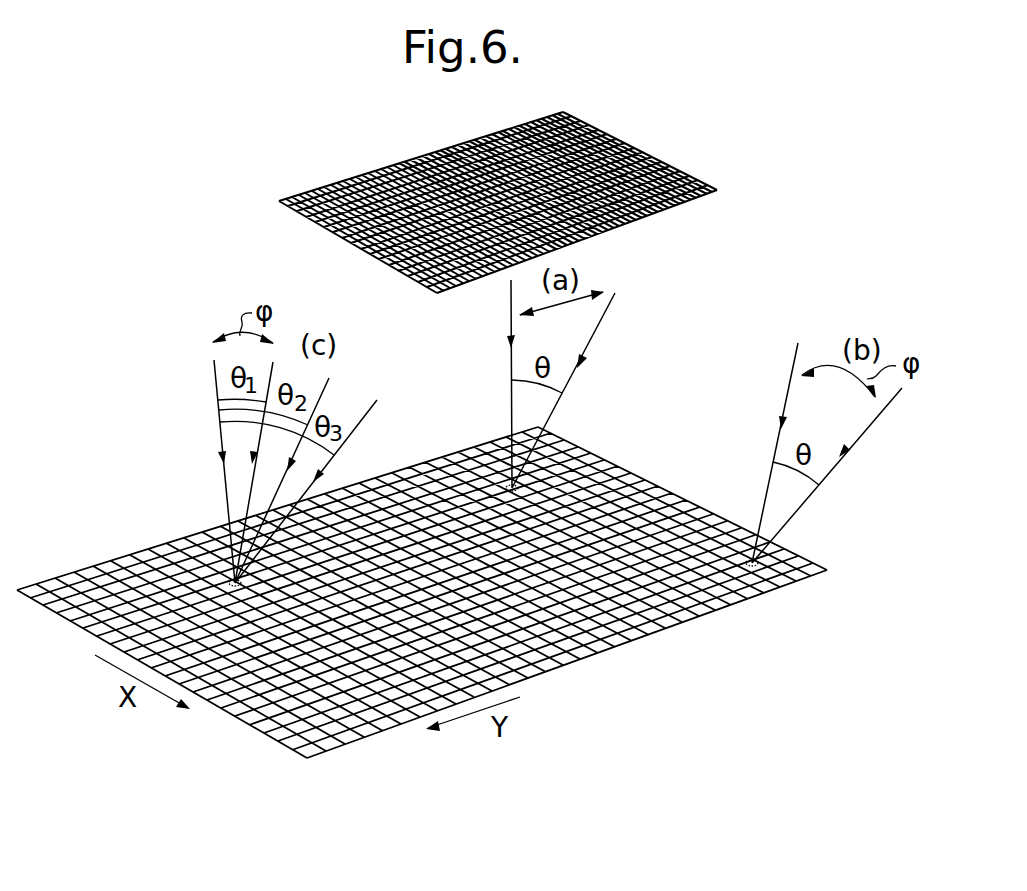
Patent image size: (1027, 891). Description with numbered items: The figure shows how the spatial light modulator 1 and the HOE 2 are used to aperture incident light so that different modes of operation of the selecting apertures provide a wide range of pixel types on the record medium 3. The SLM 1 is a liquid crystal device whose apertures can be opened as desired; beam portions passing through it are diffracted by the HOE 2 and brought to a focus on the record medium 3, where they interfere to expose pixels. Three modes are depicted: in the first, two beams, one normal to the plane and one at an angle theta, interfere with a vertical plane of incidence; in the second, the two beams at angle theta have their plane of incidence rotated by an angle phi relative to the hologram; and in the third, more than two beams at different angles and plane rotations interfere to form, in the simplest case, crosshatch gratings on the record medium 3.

The spatial light modulator 1 is at (517, 202).
The HOE 2 is at (683, 173).
The record medium 3 is at (793, 583).